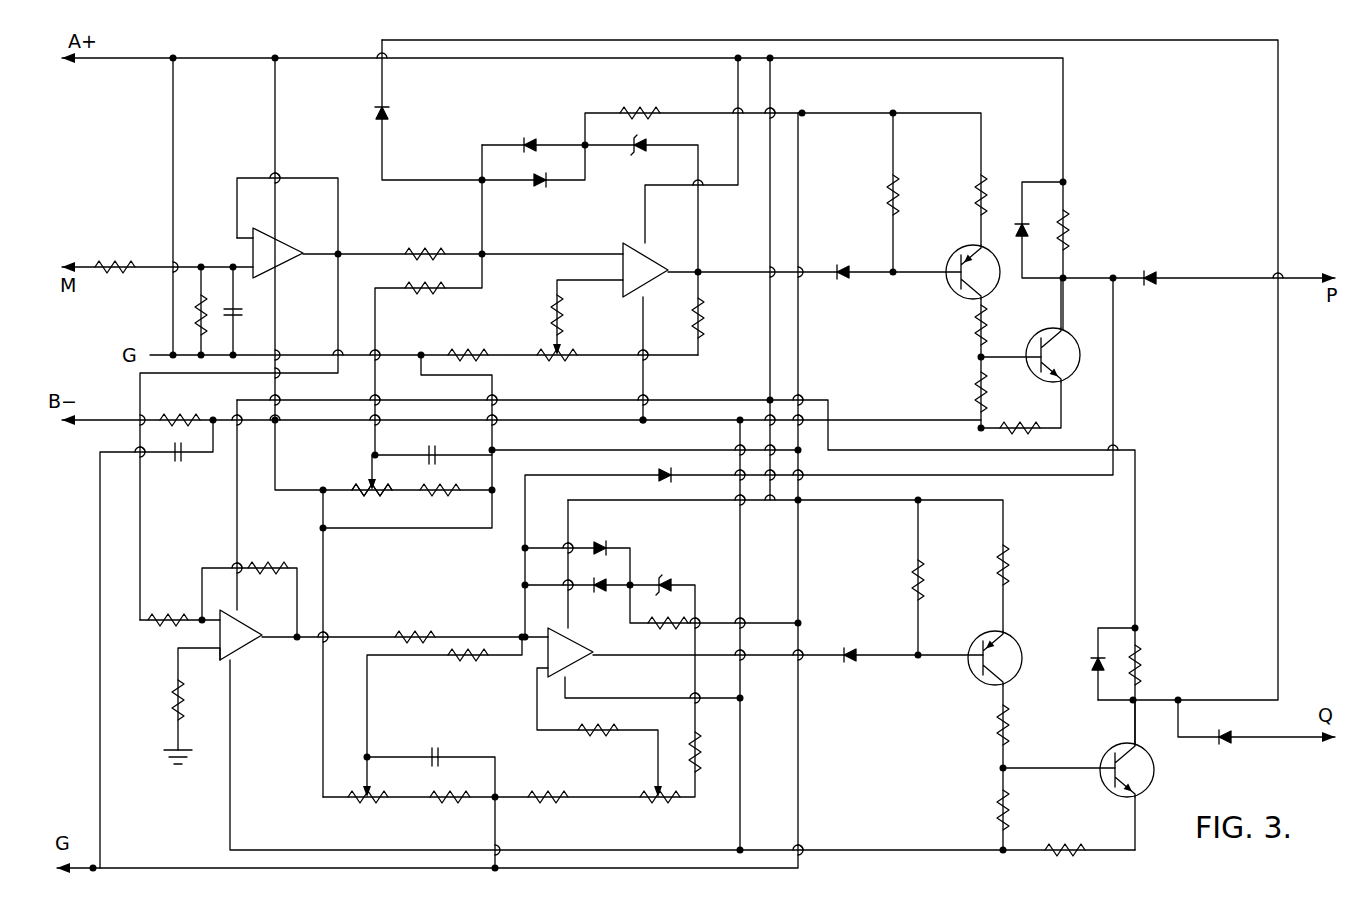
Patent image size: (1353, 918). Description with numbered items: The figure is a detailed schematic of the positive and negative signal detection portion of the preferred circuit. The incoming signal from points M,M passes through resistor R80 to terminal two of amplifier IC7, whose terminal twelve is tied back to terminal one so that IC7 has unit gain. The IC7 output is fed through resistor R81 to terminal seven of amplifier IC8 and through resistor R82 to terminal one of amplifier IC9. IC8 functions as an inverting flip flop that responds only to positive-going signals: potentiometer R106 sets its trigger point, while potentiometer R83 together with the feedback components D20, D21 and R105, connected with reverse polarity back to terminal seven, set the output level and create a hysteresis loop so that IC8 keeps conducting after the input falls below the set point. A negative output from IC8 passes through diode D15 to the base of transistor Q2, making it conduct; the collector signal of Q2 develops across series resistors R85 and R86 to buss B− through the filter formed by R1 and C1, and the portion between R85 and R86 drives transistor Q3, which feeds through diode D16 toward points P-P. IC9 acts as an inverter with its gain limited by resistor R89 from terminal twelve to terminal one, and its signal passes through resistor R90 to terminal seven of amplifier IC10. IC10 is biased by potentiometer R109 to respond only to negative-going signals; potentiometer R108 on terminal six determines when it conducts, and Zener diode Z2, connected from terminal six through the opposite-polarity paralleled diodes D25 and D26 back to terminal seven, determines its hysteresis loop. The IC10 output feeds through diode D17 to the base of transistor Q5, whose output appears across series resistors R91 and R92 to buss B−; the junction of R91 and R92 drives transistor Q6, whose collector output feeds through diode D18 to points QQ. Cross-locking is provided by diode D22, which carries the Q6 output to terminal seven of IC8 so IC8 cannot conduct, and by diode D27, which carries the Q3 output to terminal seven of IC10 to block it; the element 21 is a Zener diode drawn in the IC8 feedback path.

The zener diode 21 is at (644, 146).
The unit-gain amplifier IC7 is at (279, 251).
The flip flop amplifier IC8 is at (646, 269).
The inverter amplifier IC9 is at (243, 629).
The amplifier IC10 is at (572, 650).
The resistor R80 is at (114, 257).
The resistor R81 is at (423, 244).
The resistor R105 is at (642, 103).
The diode D22 is at (405, 114).
The diode D20 is at (529, 133).
The diode D21 is at (542, 192).
The diode D15 is at (849, 284).
The diode D16 is at (1155, 288).
The transistor Q2 is at (952, 261).
The transistor Q3 is at (1063, 372).
The series resistor R85 is at (957, 325).
The series resistor R86 is at (957, 392).
The filter resistor R1 is at (180, 409).
The filter capacitor C1 is at (173, 465).
The potentiometer R83 is at (557, 366).
The potentiometer R106 is at (374, 499).
The diode D27 is at (669, 478).
The diode D25 is at (601, 538).
The diode D26 is at (599, 597).
The Zener diode Z2 is at (669, 574).
The resistor R89 is at (268, 559).
The resistor R82 is at (168, 611).
The resistor R90 is at (413, 626).
The diode D17 is at (855, 671).
The transistor Q5 is at (1010, 642).
The transistor Q6 is at (1137, 766).
The series resistor R91 is at (980, 725).
The series resistor R92 is at (979, 810).
The diode D18 is at (1229, 752).
The potentiometer R109 is at (365, 809).
The potentiometer R108 is at (658, 809).